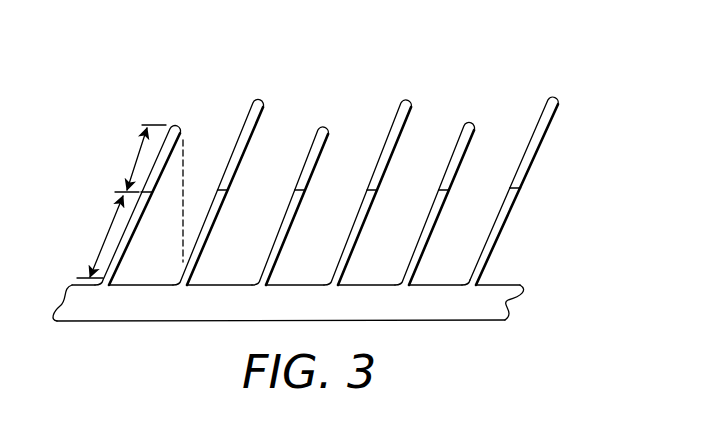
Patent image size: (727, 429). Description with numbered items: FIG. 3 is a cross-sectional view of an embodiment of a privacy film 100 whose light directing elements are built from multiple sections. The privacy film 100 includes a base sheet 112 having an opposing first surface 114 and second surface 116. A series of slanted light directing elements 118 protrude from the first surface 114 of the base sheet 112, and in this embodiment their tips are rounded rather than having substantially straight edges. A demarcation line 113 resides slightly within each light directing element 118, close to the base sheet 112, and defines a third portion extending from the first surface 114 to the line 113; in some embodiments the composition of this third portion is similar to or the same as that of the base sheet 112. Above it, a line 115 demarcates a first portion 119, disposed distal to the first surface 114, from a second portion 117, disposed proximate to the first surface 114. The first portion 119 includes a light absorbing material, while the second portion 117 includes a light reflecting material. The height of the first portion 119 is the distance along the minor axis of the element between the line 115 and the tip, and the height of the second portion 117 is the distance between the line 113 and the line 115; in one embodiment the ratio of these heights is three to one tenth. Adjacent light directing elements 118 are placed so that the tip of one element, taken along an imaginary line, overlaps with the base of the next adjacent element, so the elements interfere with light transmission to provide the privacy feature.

The privacy film 100 is at (348, 78).
The base sheet 112 is at (506, 303).
The demarcation line 113 is at (480, 278).
The first surface 114 is at (505, 283).
The line 115 is at (517, 188).
The second surface 116 is at (492, 321).
The second portion 117 is at (505, 218).
The light directing element 118 is at (562, 88).
The first portion 119 is at (549, 121).